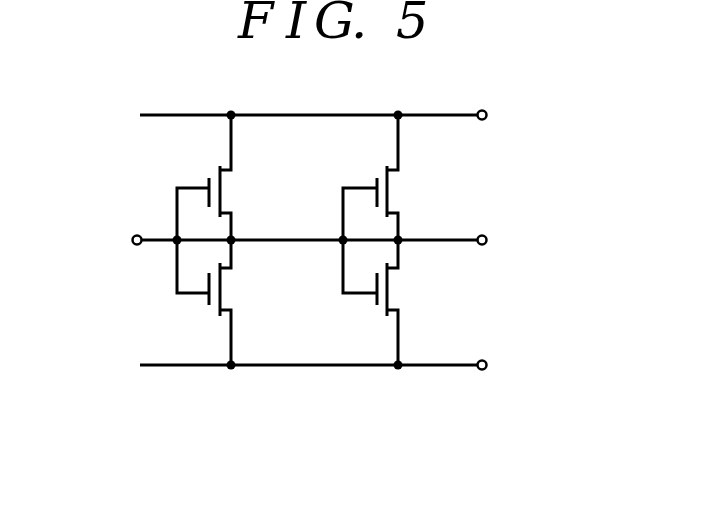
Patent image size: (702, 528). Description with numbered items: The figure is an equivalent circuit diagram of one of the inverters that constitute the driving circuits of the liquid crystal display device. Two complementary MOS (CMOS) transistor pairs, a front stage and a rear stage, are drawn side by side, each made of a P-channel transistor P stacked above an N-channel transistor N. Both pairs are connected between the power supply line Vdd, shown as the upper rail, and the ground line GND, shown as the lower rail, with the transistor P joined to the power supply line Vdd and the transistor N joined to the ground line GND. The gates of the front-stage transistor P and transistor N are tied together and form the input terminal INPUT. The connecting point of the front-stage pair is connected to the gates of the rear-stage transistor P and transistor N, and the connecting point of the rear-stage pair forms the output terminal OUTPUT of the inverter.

The P-channel MOS transistor P is at (287, 177).
The N-channel MOS transistor N is at (287, 302).
The power supply line Vdd is at (341, 115).
The ground line GND is at (348, 366).
The input terminal INPUT is at (139, 242).
The output terminal OUTPUT is at (418, 242).